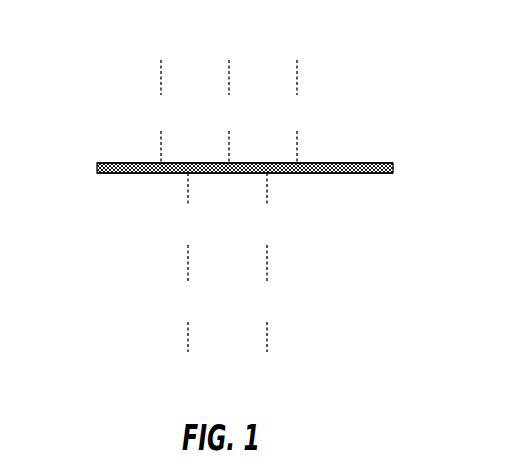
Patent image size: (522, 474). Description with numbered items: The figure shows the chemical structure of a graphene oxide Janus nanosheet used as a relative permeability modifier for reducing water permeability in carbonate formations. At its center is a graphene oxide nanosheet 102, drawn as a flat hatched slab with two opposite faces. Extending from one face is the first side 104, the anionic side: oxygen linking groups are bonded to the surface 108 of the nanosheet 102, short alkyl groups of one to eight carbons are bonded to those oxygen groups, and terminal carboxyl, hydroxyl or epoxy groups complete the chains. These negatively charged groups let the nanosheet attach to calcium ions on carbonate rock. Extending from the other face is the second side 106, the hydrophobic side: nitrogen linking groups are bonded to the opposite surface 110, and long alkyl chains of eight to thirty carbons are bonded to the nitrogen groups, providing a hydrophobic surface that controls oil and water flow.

The graphene oxide nanosheet 102 is at (378, 163).
The first side 104 is at (313, 292).
The second side 106 is at (339, 77).
The surface 108 is at (105, 163).
The opposite surface 110 is at (105, 173).